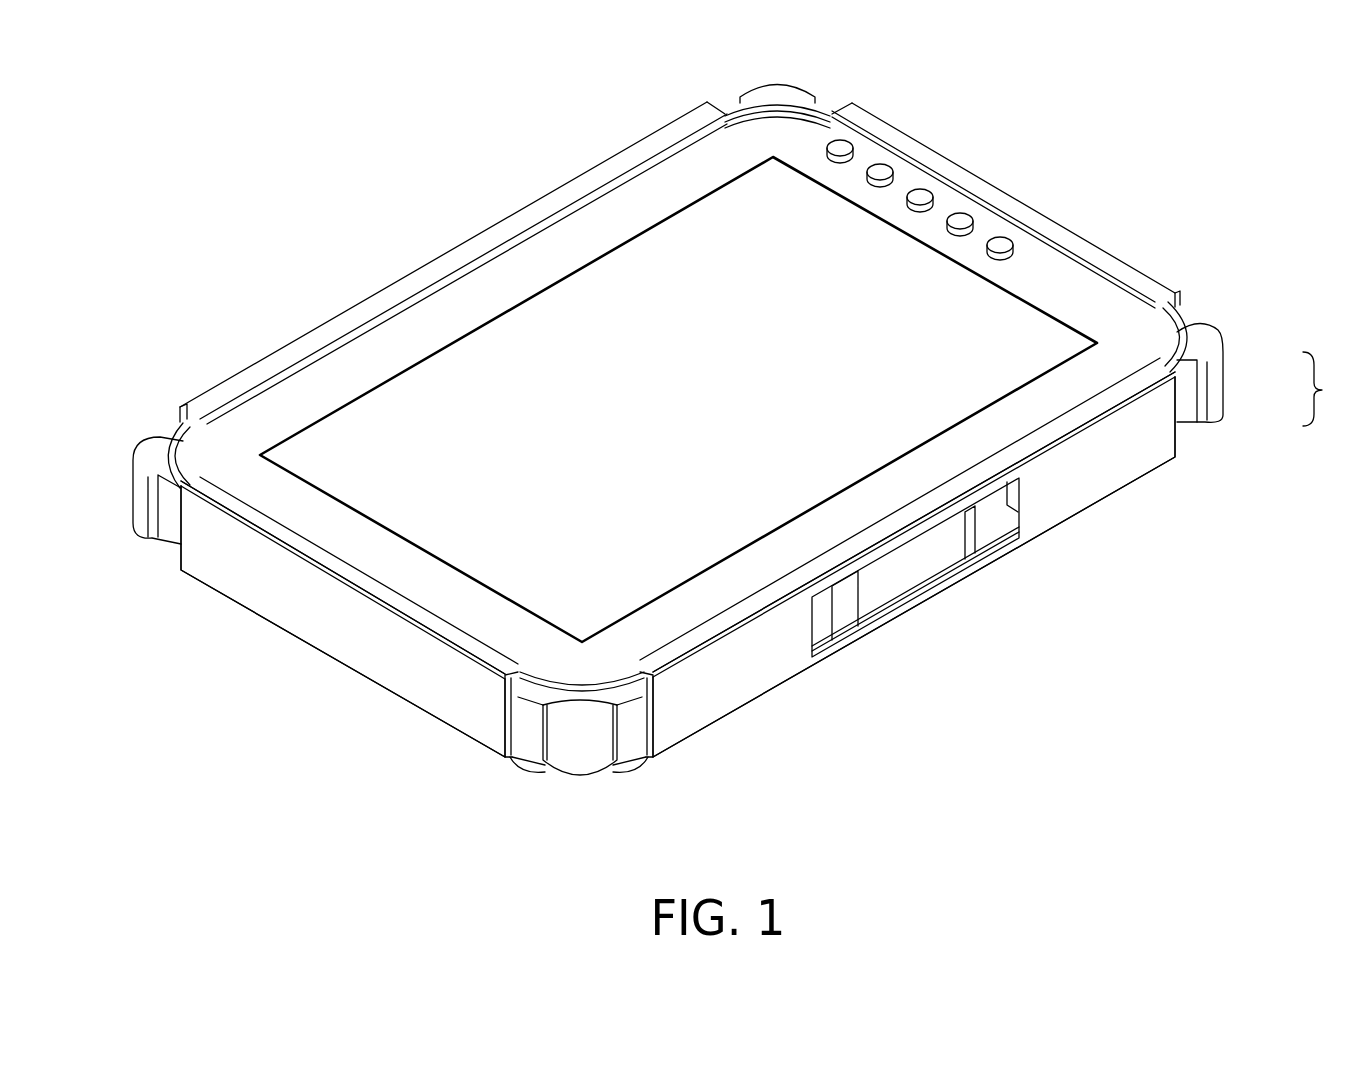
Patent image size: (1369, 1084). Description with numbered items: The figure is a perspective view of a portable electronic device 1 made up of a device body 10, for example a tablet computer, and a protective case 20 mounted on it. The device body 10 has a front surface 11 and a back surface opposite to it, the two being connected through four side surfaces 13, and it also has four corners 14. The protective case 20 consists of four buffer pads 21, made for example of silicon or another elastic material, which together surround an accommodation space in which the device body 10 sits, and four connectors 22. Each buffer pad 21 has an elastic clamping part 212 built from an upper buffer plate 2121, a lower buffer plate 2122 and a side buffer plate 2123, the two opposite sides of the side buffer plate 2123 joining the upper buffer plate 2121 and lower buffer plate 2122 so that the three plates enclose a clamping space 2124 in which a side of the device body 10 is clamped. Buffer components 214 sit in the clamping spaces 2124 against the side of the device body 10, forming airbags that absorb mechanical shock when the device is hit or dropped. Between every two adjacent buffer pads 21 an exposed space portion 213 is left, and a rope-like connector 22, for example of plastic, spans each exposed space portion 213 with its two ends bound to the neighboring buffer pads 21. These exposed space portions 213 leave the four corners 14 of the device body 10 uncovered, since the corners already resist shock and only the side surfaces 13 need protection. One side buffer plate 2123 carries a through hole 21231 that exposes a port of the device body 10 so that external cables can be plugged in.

The portable electronic device 1 is at (63, 103).
The device body 10 is at (777, 128).
The front surface 11 is at (362, 368).
The side surfaces 13 is at (158, 437).
The corners 14 is at (1213, 327).
The protective case 20 is at (1327, 389).
The buffer pads 21 is at (183, 577).
The connectors 22 is at (178, 449).
The elastic clamping part 212 is at (277, 673).
The exposed space portion 213 is at (1182, 302).
The buffer components 214 is at (513, 722).
The upper buffer plate 2121 is at (437, 627).
The lower buffer plate 2122 is at (513, 757).
The side buffer plate 2123 is at (435, 690).
The clamping space 2124 is at (557, 735).
The through hole 21231 is at (997, 550).